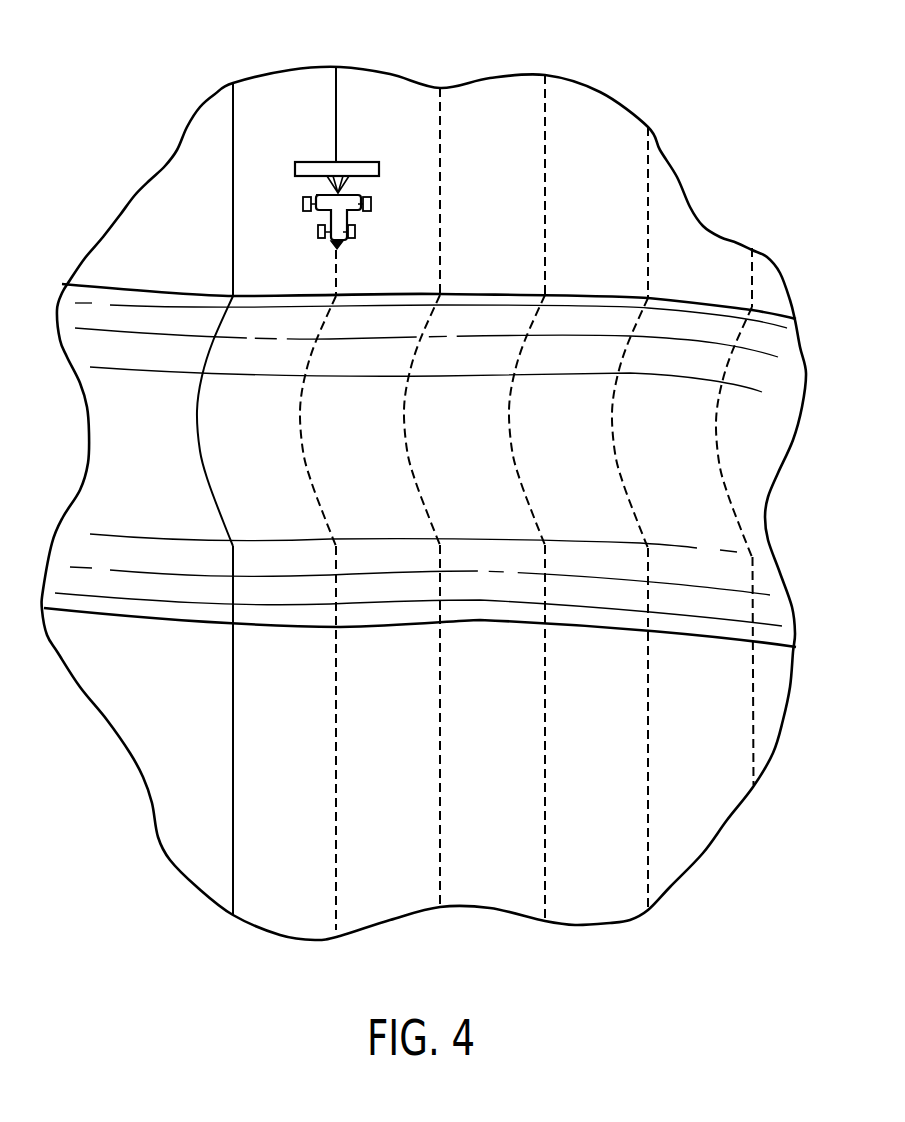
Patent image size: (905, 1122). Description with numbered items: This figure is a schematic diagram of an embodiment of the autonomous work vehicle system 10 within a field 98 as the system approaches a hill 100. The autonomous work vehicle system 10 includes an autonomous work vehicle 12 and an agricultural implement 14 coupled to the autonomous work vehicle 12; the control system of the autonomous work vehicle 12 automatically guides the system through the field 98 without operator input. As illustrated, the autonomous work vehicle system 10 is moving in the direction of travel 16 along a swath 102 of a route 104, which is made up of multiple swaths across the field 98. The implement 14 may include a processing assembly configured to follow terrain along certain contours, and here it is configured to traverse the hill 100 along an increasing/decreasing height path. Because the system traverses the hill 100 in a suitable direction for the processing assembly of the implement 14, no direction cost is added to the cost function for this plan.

The field 98 is at (493, 127).
The autonomous work vehicle system 10 is at (336, 158).
The autonomous work vehicle 12 is at (345, 205).
The agricultural implement 14 is at (320, 168).
The direction of travel 16 is at (349, 331).
The hill 100 is at (579, 362).
The swath 102 is at (302, 423).
The route 104 is at (405, 414).